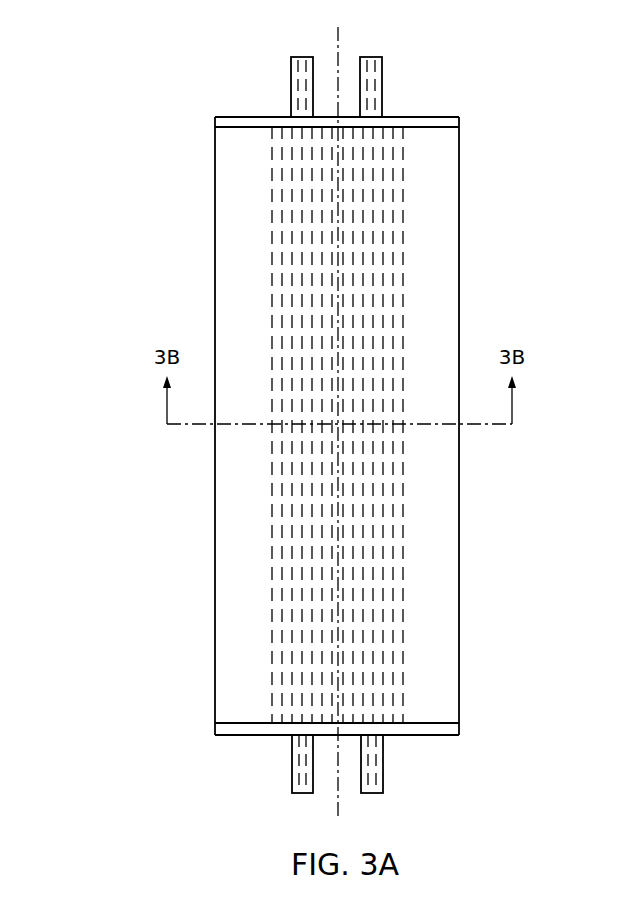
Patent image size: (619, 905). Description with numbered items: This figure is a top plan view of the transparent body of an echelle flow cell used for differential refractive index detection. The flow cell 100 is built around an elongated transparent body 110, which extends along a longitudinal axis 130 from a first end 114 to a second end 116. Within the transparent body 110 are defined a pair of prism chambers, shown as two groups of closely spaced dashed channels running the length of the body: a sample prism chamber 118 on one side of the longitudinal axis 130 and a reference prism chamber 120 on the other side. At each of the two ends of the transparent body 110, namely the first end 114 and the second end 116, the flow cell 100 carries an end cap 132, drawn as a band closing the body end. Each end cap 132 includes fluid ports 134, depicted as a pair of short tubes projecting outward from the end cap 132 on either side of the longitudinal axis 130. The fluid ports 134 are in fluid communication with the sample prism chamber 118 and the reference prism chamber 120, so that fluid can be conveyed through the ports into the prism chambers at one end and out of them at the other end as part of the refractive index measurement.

The flow cell 100 is at (134, 58).
The transparent body 110 is at (215, 478).
The first end 114 is at (209, 723).
The second end 116 is at (209, 128).
The sample prism chamber 118 is at (265, 218).
The reference prism chamber 120 is at (412, 253).
The longitudinal axis 130 is at (338, 45).
The end cap 132 is at (459, 122).
The fluid ports 134 is at (291, 88).